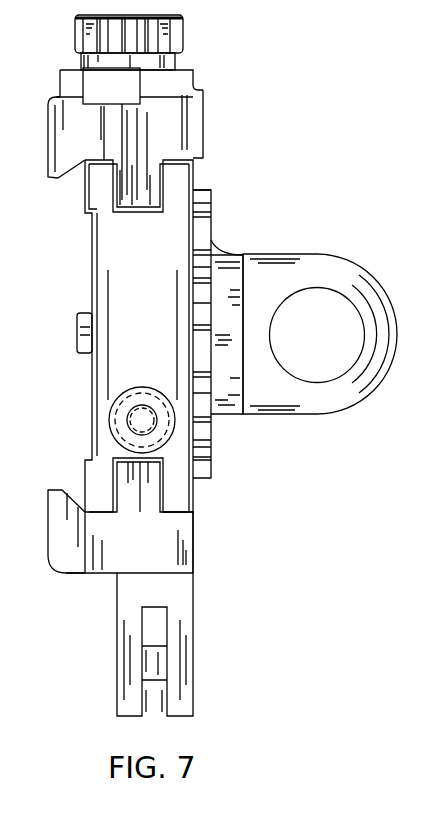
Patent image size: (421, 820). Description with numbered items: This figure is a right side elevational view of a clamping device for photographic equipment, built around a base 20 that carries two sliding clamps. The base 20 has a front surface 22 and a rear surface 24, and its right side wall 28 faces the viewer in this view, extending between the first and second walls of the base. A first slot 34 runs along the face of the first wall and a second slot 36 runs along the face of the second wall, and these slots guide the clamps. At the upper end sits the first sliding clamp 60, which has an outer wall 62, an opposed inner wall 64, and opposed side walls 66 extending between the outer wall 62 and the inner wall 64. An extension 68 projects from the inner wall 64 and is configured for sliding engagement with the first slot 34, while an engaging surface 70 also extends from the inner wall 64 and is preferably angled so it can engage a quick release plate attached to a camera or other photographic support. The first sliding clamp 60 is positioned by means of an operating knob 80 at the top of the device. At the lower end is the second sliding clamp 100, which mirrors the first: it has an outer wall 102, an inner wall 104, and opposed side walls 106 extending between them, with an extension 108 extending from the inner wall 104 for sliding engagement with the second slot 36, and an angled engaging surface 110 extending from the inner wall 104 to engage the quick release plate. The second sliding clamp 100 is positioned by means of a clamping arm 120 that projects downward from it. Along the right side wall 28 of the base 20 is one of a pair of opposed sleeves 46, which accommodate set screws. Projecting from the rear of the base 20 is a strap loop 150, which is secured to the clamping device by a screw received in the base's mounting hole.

The operating knob 80 is at (185, 36).
The first sliding clamp 60 is at (170, 150).
The outer wall 62 is at (58, 97).
The side walls 66 is at (58, 146).
The engaging surface 70 is at (52, 182).
The inner wall 64 is at (190, 152).
The extension 68 is at (153, 192).
The base 20 is at (157, 272).
The front surface 22 is at (90, 283).
The first slot 34 is at (140, 213).
The second slot 36 is at (185, 462).
The right side wall 28 is at (117, 373).
The sleeves 46 is at (175, 420).
The rear surface 24 is at (195, 283).
The strap loop 150 is at (327, 407).
The second sliding clamp 100 is at (160, 557).
The engaging surface 110 is at (57, 488).
The outer wall 102 is at (80, 575).
The extension 108 is at (153, 497).
The inner wall 104 is at (187, 515).
The side walls 106 is at (187, 562).
The clamping arm 120 is at (185, 706).